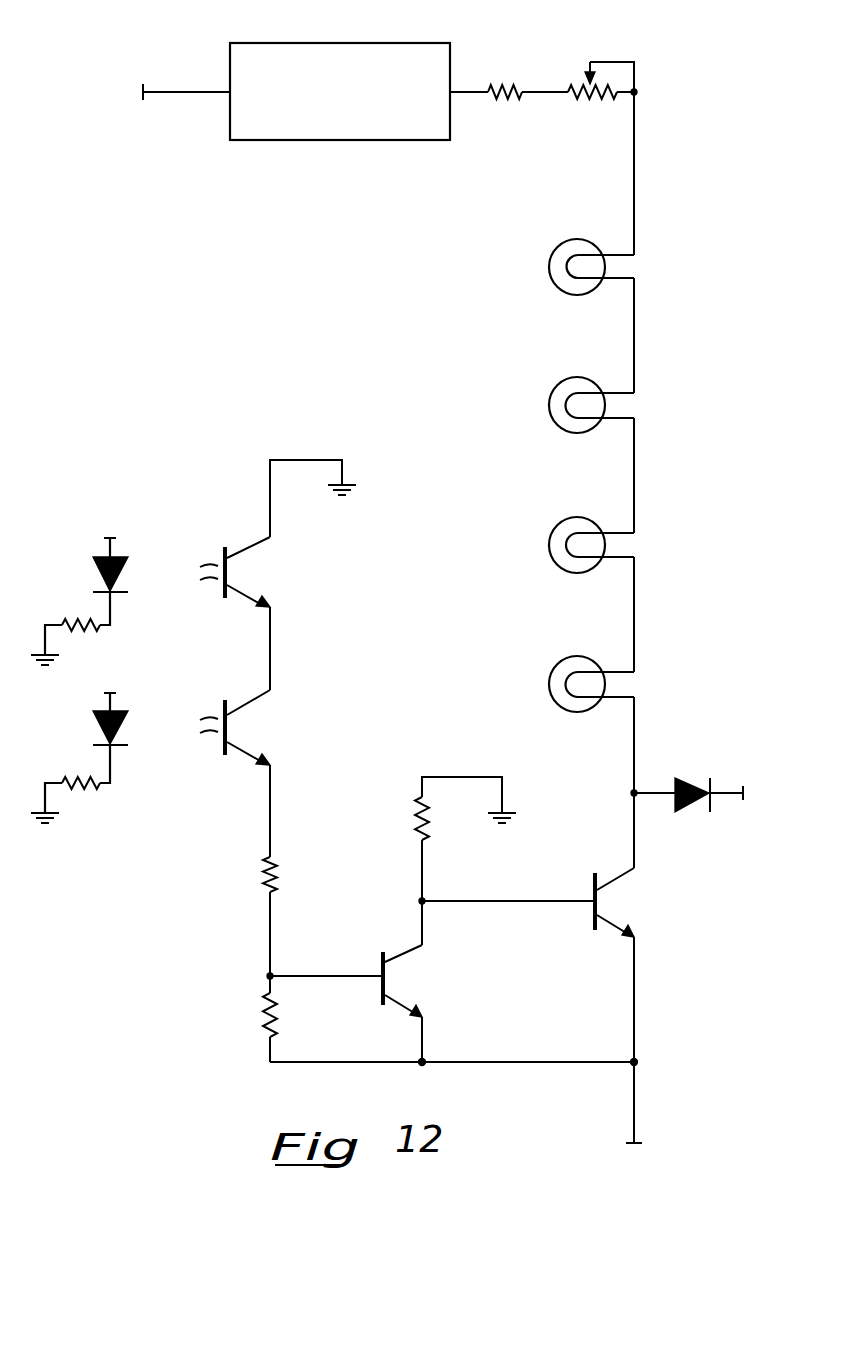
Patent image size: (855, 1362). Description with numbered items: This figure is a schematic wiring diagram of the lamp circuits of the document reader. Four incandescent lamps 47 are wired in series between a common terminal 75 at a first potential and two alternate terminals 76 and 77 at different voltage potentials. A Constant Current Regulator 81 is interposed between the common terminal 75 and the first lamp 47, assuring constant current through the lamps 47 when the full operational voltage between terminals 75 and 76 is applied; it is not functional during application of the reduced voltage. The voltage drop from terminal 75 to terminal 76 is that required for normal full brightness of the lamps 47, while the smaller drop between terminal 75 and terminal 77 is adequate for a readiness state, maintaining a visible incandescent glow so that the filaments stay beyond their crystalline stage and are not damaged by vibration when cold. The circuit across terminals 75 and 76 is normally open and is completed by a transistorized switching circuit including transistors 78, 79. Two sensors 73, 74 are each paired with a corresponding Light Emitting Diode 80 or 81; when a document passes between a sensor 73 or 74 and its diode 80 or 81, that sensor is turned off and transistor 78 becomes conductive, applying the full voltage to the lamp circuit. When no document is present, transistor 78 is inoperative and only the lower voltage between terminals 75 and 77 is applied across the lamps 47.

The incandescent lamps 47 is at (580, 295).
The sensor 73 is at (228, 575).
The sensor 74 is at (228, 728).
The common terminal 75 is at (145, 95).
The terminal 76 is at (636, 1140).
The terminal 77 is at (743, 796).
The transistor 78 is at (600, 903).
The transistor 79 is at (390, 985).
The light emitting diode 80 is at (126, 568).
The constant current regulator 81 is at (452, 45).